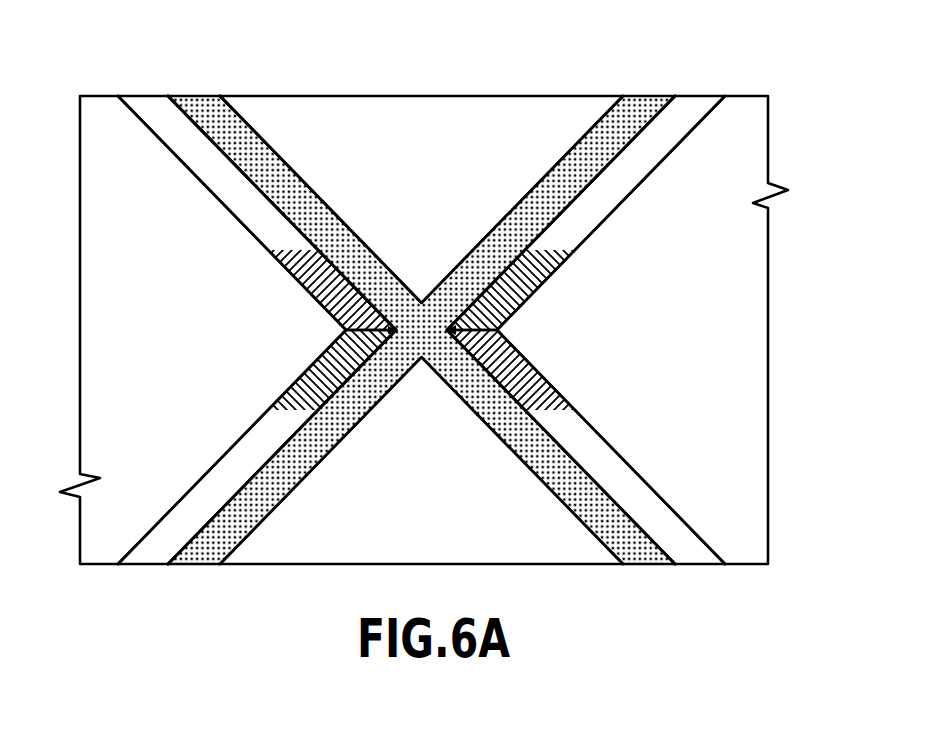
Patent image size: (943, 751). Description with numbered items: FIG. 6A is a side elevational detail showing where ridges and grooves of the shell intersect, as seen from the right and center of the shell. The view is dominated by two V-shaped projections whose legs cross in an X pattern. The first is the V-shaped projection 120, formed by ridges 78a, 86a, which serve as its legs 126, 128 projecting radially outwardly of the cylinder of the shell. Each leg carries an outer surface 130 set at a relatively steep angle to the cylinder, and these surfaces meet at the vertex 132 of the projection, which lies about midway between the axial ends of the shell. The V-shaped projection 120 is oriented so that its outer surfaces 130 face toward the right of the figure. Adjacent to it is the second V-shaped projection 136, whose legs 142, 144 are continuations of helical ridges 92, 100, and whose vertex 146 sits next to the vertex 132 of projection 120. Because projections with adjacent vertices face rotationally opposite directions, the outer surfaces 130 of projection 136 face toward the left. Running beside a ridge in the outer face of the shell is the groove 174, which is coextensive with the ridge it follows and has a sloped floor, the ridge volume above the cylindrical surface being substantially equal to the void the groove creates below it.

The ridge 78a is at (257, 173).
The leg 126 is at (152, 102).
The outer surface 130 is at (200, 118).
The groove 174 is at (303, 203).
The V-shaped projection 120 is at (273, 240).
The vertex 132 is at (396, 330).
The V-shaped projection 136 is at (580, 215).
The ridge 92 is at (637, 179).
The leg 142 is at (683, 113).
The vertex 146 is at (456, 331).
The ridge 86a is at (225, 484).
The leg 128 is at (148, 553).
The ridge 100 is at (613, 478).
The leg 144 is at (690, 552).